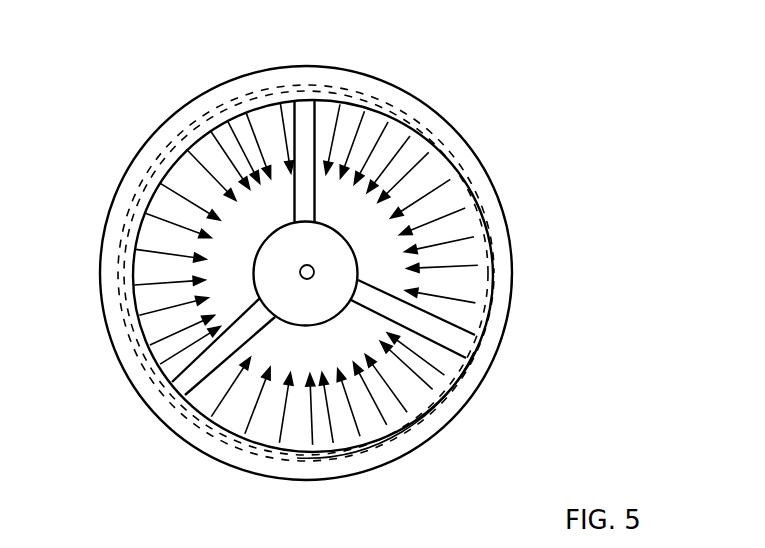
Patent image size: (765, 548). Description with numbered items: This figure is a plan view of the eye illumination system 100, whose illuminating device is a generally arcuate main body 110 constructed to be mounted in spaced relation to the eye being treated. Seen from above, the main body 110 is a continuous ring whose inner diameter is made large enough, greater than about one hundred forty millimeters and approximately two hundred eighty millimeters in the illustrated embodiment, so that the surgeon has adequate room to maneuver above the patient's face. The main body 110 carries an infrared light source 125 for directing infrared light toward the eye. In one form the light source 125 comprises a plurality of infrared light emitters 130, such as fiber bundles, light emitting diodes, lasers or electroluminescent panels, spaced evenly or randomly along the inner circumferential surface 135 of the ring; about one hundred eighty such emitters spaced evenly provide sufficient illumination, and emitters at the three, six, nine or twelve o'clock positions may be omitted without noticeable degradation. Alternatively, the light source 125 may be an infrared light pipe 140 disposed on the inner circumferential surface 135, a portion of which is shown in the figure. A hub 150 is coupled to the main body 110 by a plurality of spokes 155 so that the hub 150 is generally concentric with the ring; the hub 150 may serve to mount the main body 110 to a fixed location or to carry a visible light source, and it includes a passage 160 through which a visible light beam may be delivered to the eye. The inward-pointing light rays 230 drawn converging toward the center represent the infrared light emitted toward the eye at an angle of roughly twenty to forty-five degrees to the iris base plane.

The eye illumination system 100 is at (556, 262).
The main body 110 is at (418, 98).
The infrared light source 125 is at (468, 158).
The infrared light emitters 130 is at (190, 108).
The inner circumferential surface 135 is at (260, 116).
The infrared light pipe 140 is at (355, 452).
The hub 150 is at (342, 253).
The spokes 155 is at (305, 94).
The passage 160 is at (300, 268).
The light rays 230 is at (438, 216).